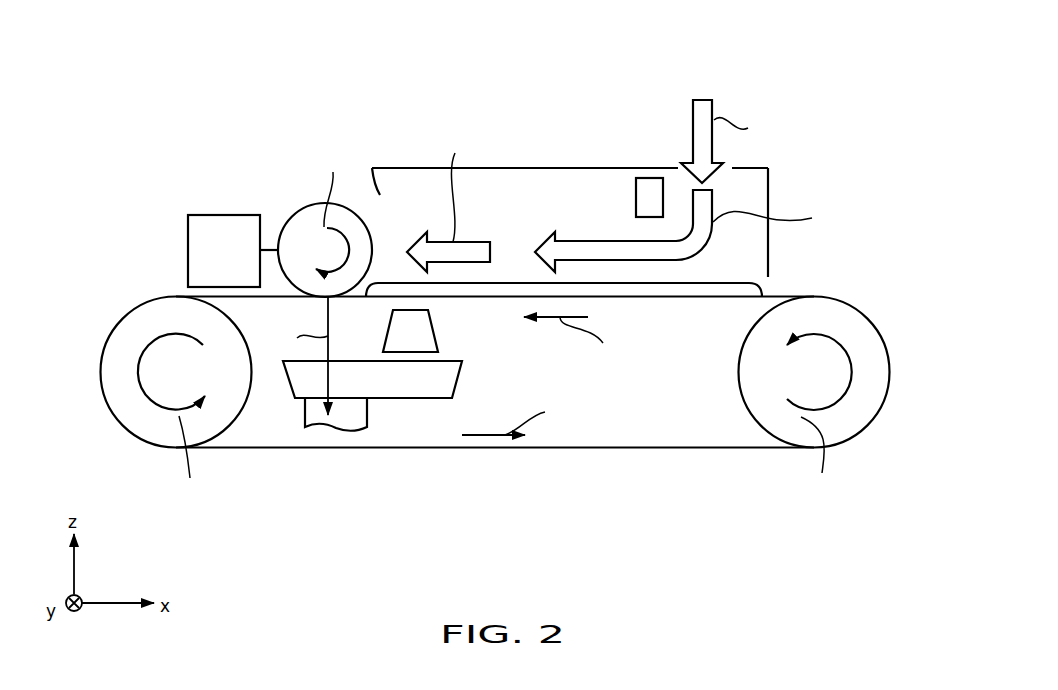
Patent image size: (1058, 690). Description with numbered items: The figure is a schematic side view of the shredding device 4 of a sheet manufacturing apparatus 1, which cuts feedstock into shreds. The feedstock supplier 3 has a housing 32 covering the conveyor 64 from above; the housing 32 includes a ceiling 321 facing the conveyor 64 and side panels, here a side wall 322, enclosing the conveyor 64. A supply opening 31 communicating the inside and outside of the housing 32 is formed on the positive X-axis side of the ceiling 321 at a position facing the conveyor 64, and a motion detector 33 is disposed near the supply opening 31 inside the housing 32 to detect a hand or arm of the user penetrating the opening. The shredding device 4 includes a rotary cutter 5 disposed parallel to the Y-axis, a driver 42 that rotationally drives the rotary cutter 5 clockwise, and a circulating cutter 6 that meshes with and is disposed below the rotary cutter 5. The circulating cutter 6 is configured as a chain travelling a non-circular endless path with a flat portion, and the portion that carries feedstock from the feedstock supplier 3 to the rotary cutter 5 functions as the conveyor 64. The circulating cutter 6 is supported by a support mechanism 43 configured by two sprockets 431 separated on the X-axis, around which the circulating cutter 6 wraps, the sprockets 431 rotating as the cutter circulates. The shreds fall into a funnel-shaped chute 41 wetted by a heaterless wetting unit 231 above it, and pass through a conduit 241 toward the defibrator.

The three-dimensional shaping device 1 is at (803, 80).
The feedstock supplier 3 is at (777, 172).
The housing 32 is at (629, 172).
The ceiling 321 is at (601, 168).
The side wall of hopper 322 is at (768, 262).
The supply opening 31 is at (673, 165).
The motion detector 33 is at (650, 196).
The shredding device 4 is at (268, 172).
The driver 42 is at (209, 235).
The rotary cutter 5 is at (316, 207).
The circulating cutter 6 is at (396, 297).
The conveyor 64 is at (517, 283).
The chute 41 is at (445, 385).
The conduit 241 is at (368, 415).
The wetting unit 231 is at (433, 337).
The sprocket 431 is at (143, 418).
The support mechanism 43 is at (517, 396).